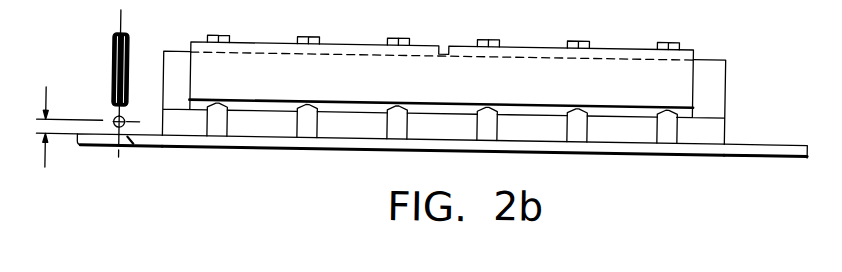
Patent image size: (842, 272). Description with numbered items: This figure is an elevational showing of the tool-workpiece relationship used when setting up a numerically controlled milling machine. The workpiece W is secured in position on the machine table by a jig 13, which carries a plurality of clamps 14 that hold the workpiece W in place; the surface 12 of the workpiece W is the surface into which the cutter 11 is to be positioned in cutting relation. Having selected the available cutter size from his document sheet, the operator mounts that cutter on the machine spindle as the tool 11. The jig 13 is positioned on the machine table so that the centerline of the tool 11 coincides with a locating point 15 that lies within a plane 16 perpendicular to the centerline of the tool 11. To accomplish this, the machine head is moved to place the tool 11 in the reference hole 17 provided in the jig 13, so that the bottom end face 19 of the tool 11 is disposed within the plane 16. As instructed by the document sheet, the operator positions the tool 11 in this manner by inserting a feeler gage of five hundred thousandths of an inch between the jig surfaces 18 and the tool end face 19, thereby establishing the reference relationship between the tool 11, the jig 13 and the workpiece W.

The cutter 11 is at (111, 62).
The surface 12 is at (460, 87).
The jig 13 is at (445, 150).
The clamps 14 is at (389, 36).
The locating point 15 is at (125, 123).
The plane 16 is at (79, 122).
The reference hole 17 is at (133, 162).
The jig surfaces 18 is at (795, 139).
The bottom end face 19 is at (112, 112).
The workpiece W is at (693, 45).